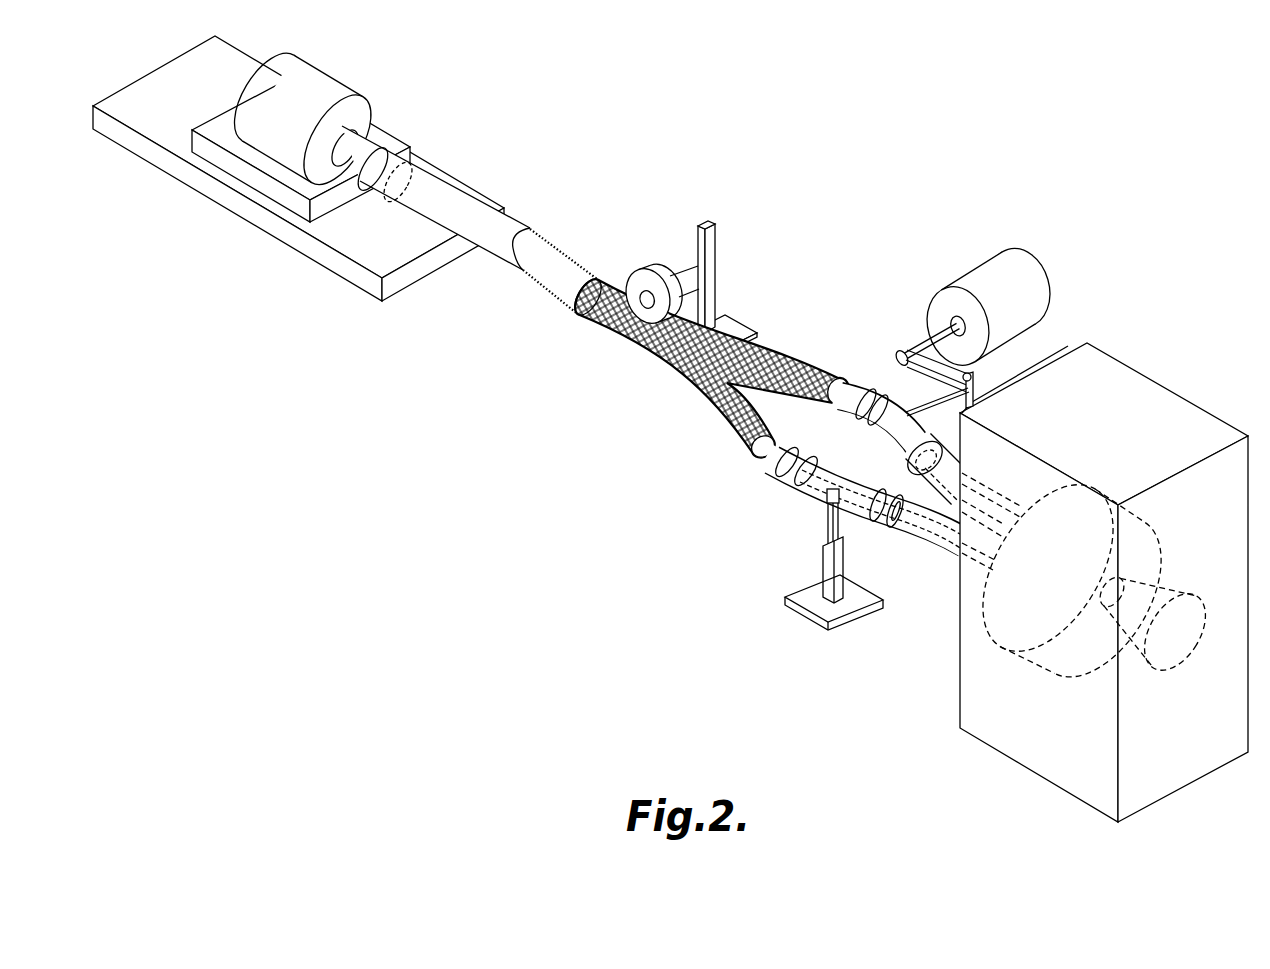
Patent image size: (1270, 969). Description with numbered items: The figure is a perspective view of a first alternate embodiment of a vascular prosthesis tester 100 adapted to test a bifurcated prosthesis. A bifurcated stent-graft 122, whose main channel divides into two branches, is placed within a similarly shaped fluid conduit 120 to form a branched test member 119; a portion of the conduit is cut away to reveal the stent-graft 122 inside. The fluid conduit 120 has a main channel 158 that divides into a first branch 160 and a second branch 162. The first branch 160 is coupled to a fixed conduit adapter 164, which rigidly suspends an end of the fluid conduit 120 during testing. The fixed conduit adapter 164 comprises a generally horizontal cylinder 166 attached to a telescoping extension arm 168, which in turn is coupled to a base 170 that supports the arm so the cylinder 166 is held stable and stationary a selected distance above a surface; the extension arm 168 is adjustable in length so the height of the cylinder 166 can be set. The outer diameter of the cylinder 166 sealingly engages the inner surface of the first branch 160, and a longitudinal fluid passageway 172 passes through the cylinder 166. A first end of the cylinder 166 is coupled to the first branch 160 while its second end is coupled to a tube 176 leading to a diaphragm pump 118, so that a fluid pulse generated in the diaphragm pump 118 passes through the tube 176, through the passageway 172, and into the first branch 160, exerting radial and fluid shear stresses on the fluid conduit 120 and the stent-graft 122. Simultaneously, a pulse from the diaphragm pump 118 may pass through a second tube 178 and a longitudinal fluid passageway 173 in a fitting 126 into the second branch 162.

The vascular prosthesis tester 100 is at (742, 104).
The diaphragm pump 118 is at (1132, 387).
The branched test member 119 is at (612, 335).
The fluid conduit 120 is at (427, 160).
The bifurcated stent-graft 122 is at (657, 367).
The fitting 126 is at (895, 400).
The main channel 158 is at (580, 314).
The first branch 160 is at (727, 440).
The second branch 162 is at (828, 368).
The fixed conduit adapter 164 is at (827, 579).
The cylinder 166 is at (858, 522).
The telescoping extension arm 168 is at (826, 562).
The base 170 is at (861, 618).
The longitudinal fluid passageway 172 is at (800, 492).
The longitudinal fluid passageway 173 is at (903, 440).
The tube 176 is at (933, 532).
The second tube 178 is at (915, 470).